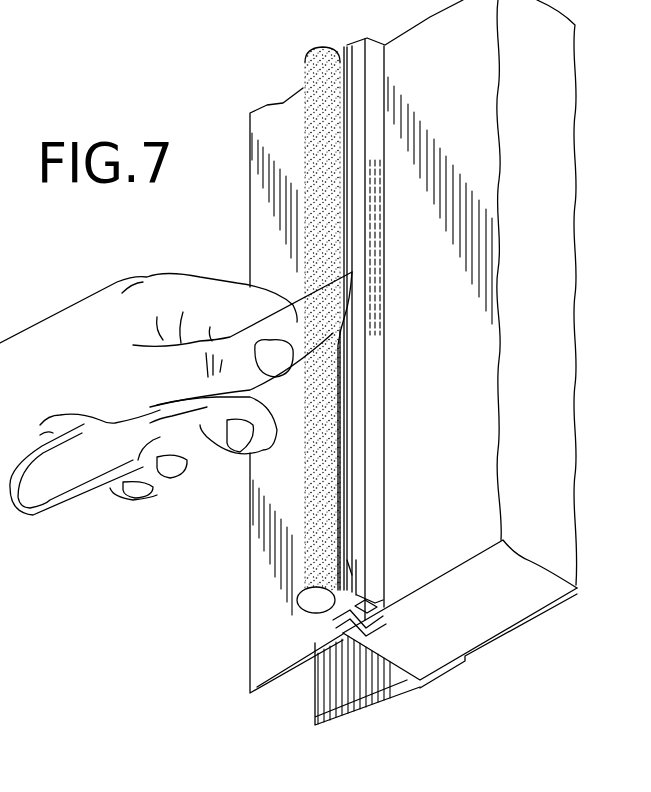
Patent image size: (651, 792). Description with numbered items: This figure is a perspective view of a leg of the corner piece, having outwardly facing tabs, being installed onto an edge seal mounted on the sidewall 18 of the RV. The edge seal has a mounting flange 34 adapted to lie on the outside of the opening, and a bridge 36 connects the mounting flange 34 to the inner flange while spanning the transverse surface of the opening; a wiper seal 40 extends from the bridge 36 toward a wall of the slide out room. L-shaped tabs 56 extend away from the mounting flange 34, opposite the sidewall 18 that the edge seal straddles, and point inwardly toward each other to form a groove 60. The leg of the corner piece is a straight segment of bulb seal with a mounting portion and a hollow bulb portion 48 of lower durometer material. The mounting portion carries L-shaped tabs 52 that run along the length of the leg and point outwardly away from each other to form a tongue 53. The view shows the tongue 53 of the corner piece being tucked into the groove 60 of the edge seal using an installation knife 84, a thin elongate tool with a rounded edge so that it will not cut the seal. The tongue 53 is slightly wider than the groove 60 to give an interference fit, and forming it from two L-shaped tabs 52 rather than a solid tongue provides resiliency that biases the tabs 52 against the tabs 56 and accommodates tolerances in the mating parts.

The sidewall 18 is at (452, 509).
The mounting flange 34 is at (375, 582).
The bridge 36 is at (393, 675).
The wiper seal 40 is at (252, 673).
The bulb portion 48 is at (318, 556).
The L-shaped tabs 52 is at (362, 590).
The tongue 53 is at (345, 560).
The L-shaped tabs 56 is at (333, 622).
The groove 60 is at (345, 635).
The installation knife 84 is at (62, 482).